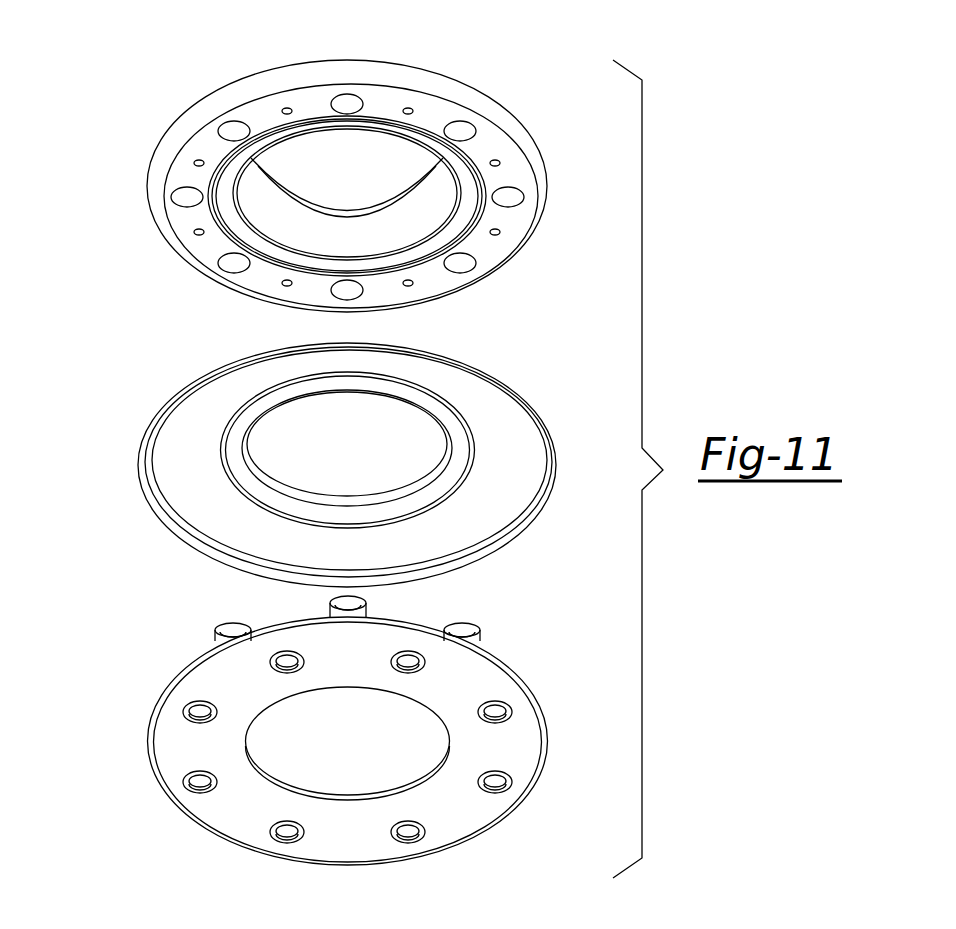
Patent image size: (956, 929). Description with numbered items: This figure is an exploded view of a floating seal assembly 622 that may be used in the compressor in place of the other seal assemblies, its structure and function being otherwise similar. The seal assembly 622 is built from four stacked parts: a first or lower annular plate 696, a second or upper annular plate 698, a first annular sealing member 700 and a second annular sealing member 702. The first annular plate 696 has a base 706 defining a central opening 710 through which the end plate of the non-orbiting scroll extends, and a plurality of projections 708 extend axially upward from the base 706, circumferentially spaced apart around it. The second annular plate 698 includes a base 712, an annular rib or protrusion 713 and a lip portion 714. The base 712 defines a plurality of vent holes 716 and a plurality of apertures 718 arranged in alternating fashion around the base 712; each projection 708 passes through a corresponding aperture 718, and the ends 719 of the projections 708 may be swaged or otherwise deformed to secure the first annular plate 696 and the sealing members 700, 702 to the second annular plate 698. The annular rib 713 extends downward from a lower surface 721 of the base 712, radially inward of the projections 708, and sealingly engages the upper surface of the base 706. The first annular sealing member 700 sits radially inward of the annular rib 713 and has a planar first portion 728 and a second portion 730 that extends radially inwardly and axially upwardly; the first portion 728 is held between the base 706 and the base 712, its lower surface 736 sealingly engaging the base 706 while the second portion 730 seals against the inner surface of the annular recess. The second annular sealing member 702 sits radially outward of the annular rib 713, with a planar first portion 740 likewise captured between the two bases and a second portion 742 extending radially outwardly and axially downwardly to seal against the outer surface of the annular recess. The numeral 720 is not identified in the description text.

The seal assembly 622 is at (532, 58).
The first annular plate 696 is at (331, 748).
The second annular plate 698 is at (352, 156).
The first annular sealing member 700 is at (450, 505).
The second annular sealing member 702 is at (334, 450).
The base 706 is at (500, 752).
The projections 708 is at (478, 644).
The central opening 710 is at (275, 737).
The base 712 is at (513, 157).
The annular rib 713 is at (226, 164).
The lip portion 714 is at (305, 218).
The vent holes 716 is at (496, 166).
The apertures 718 is at (233, 265).
The ends 719 is at (330, 609).
The upper flange reference 720 is at (229, 5).
The lower surface 721 is at (388, 101).
The first portion 728 is at (243, 490).
The second portion 730 is at (284, 488).
The lower surface 736 is at (233, 447).
The first portion 740 is at (528, 428).
The second portion 742 is at (557, 458).